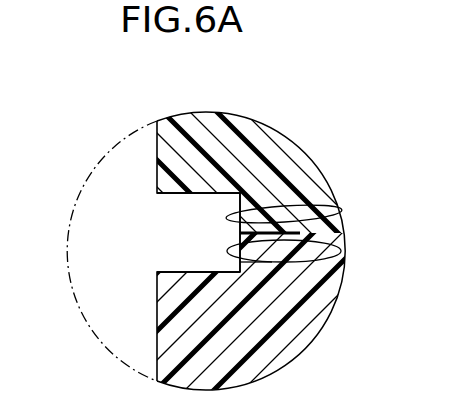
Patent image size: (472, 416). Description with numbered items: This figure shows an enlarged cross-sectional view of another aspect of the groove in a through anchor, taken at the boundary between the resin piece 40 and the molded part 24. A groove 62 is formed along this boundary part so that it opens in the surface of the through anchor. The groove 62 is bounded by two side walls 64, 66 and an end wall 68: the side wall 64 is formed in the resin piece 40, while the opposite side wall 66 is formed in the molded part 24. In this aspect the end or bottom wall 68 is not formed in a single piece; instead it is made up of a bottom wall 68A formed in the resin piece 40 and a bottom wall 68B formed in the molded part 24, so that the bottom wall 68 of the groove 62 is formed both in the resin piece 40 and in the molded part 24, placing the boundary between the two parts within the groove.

The resin piece 40 is at (157, 151).
The molded part 24 is at (157, 320).
The groove 62 is at (143, 198).
The side wall 64 is at (180, 194).
The side wall 66 is at (178, 272).
The end wall 68 is at (418, 198).
The bottom wall 68A is at (330, 214).
The bottom wall 68B is at (327, 260).